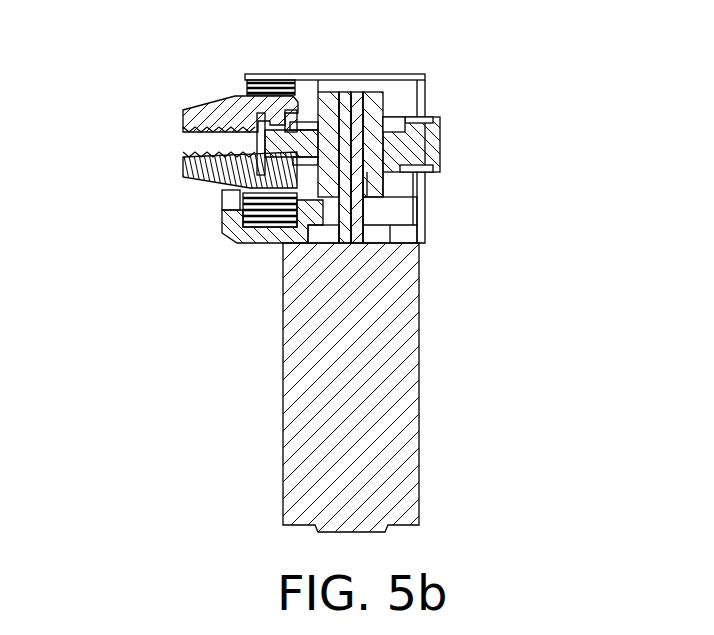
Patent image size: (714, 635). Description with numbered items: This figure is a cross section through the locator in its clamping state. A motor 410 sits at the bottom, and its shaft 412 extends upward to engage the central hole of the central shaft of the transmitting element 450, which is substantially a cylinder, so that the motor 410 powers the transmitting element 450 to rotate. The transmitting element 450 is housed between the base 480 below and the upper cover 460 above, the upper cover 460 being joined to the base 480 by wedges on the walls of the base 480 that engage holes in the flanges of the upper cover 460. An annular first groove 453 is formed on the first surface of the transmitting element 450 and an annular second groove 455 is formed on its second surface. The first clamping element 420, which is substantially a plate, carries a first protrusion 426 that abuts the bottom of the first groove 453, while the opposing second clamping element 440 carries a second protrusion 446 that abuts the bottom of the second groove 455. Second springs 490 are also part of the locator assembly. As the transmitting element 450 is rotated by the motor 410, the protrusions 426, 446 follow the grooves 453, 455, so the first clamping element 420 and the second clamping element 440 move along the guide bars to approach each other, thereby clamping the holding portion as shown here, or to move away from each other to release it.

The motor 410 is at (395, 403).
The shaft 412 is at (363, 182).
The first clamping element 420 is at (183, 111).
The first protrusion 426 is at (283, 85).
The second clamping element 440 is at (183, 183).
The second protrusion 446 is at (235, 215).
The transmitting element 450 is at (415, 147).
The first groove 453 is at (268, 145).
The second groove 455 is at (268, 155).
The upper cover 460 is at (333, 77).
The base 480 is at (413, 233).
The second springs 490 is at (280, 213).